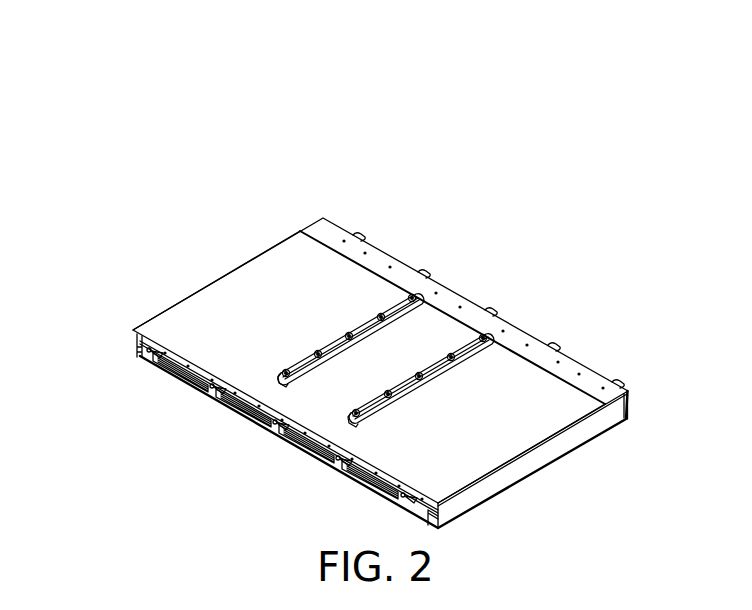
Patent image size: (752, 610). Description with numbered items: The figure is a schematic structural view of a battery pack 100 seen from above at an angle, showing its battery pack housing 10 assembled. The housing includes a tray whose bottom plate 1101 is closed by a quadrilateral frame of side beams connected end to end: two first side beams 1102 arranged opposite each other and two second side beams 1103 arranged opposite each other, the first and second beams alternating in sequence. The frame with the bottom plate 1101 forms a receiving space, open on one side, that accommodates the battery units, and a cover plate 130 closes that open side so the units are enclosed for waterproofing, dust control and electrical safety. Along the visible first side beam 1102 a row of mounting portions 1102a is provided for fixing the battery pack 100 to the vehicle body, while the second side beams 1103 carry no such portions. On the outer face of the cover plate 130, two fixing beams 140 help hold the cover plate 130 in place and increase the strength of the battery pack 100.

The battery pack 100 is at (337, 12).
The battery pack housing 10 is at (124, 329).
The cover plate 130 is at (275, 262).
The fixing beam 140 is at (427, 298).
The bottom plate 1101 is at (626, 421).
The first side beam 1102 is at (361, 483).
The mounting portion 1102a is at (366, 240).
The second side beam 1103 is at (510, 472).